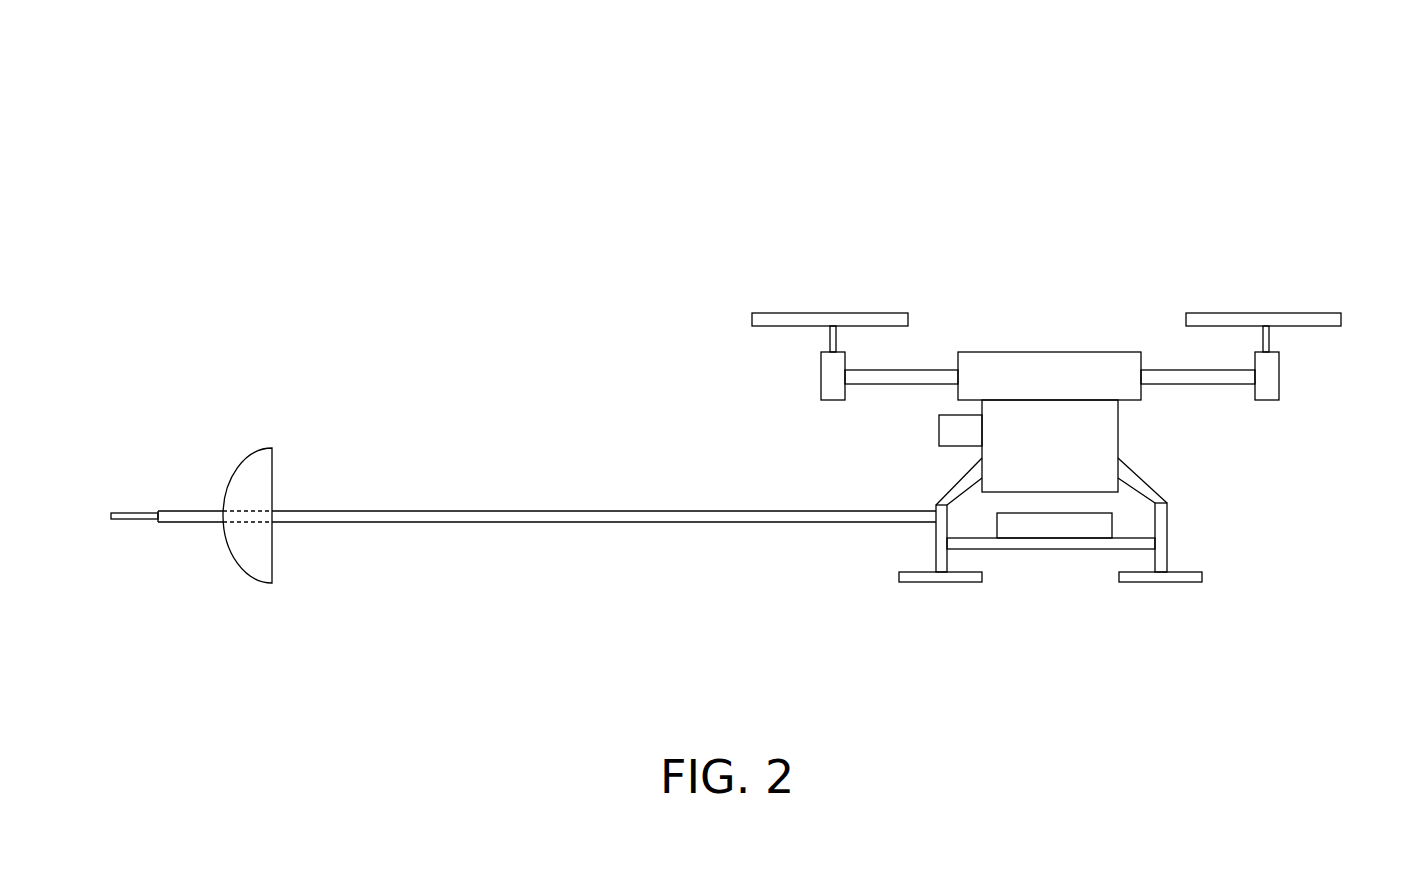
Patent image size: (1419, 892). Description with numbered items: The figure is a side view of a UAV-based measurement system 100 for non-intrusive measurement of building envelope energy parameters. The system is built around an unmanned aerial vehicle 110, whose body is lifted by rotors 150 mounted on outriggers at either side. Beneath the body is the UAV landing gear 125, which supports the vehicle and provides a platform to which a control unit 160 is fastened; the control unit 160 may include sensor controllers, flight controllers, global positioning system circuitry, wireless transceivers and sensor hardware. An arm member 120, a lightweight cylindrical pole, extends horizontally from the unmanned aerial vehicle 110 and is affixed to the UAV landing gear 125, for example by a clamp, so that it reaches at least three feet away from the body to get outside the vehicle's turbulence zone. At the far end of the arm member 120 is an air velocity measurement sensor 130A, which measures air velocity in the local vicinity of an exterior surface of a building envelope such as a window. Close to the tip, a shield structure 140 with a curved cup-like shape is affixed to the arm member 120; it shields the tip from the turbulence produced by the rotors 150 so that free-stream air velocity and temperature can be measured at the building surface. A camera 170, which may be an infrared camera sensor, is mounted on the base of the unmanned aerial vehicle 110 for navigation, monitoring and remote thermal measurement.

The UAV-based measurement system 100 is at (1062, 110).
The unmanned aerial vehicle 110 is at (1013, 352).
The arm member 120 is at (698, 522).
The UAV landing gear 125 is at (1160, 535).
The air velocity measurement sensor 130A is at (131, 520).
The shield structure 140 is at (272, 563).
The rotors 150 is at (1341, 319).
The control unit 160 is at (1054, 525).
The camera 170 is at (939, 430).